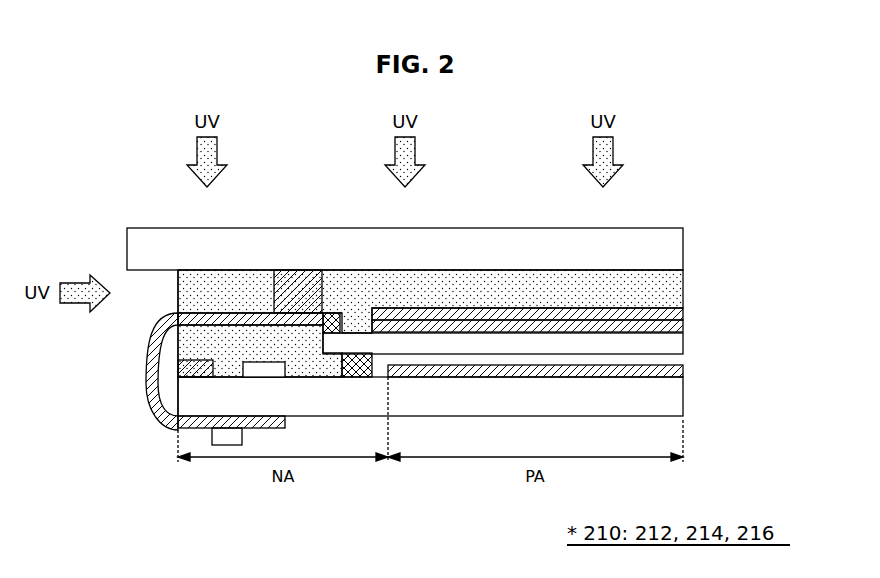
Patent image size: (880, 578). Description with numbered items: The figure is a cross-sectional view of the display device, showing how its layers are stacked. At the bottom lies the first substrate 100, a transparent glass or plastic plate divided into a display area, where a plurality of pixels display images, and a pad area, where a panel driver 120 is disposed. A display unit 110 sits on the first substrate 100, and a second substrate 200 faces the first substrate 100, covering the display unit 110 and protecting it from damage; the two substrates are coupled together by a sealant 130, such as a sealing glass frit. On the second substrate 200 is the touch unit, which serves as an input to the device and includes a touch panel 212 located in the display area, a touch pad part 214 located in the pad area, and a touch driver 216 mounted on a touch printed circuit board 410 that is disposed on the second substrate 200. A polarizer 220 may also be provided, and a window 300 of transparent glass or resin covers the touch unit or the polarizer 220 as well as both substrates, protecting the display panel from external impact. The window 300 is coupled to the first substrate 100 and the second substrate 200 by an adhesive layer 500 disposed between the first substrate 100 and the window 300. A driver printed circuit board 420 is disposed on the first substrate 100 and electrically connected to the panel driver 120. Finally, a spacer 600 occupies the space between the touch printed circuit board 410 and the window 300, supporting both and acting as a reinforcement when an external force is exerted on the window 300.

The first substrate 100 is at (668, 399).
The display unit 110 is at (668, 372).
The panel driver 120 is at (177, 345).
The sealant 130 is at (352, 353).
The second substrate 200 is at (668, 345).
The touch panel 212 is at (668, 325).
The touch pad part 214 is at (328, 313).
The touch driver 216 is at (168, 418).
The polarizer 220 is at (670, 306).
The window 300 is at (665, 248).
The touch printed circuit board 410 is at (162, 363).
The driver printed circuit board 420 is at (148, 393).
The adhesive layer 500 is at (505, 290).
The spacer 600 is at (295, 287).